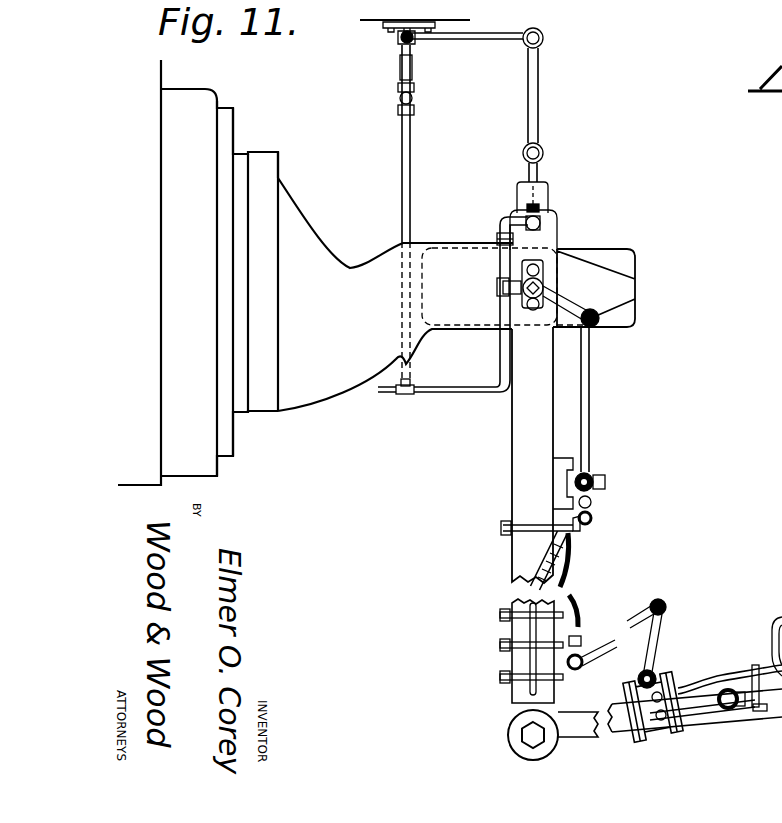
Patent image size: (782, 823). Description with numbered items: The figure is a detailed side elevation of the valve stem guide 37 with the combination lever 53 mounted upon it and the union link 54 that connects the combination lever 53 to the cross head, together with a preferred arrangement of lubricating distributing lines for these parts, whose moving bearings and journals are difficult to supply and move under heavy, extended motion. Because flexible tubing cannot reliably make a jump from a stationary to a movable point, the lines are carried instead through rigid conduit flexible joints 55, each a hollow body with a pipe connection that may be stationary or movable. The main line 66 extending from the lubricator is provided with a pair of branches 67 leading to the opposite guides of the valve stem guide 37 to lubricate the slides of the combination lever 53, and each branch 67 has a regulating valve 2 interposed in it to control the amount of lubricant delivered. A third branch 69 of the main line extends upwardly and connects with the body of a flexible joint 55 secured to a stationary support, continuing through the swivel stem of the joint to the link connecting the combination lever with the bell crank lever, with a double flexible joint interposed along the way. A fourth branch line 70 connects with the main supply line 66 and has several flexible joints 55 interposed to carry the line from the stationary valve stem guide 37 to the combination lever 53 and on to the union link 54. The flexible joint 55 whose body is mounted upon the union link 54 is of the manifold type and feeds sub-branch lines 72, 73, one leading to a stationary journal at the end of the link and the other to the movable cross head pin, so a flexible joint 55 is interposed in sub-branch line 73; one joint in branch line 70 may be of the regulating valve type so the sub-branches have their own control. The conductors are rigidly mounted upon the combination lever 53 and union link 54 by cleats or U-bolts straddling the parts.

The flexible joint 55 is at (400, 40).
The regulating valve 2 is at (412, 100).
The third branch 69 is at (407, 165).
The valve stem guide 37 is at (528, 287).
The fourth branch line 70 is at (541, 293).
The main line 66 is at (386, 394).
The branches 67 is at (462, 390).
The combination lever 53 is at (520, 444).
The union link 54 is at (588, 736).
The sub-branch line 72 is at (723, 672).
The sub-branch line 73 is at (700, 718).